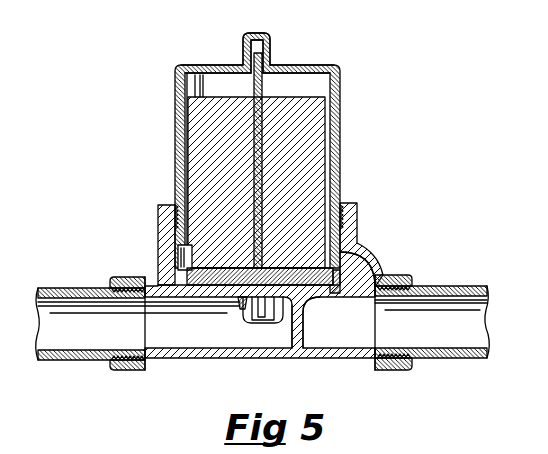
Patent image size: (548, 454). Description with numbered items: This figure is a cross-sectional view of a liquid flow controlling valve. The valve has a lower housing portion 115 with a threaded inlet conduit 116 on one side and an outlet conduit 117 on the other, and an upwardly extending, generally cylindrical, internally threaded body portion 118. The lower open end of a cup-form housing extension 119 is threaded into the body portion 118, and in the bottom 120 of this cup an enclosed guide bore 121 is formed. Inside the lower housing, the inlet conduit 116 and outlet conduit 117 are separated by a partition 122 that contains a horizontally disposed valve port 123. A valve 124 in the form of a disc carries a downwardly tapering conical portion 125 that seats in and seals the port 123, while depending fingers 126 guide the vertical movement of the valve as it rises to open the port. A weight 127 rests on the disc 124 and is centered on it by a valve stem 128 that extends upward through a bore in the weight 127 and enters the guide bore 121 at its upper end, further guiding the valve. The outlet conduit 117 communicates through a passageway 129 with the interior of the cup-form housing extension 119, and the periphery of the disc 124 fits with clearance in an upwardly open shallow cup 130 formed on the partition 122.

The lower housing portion 115 is at (246, 358).
The inlet conduit 116 is at (140, 371).
The outlet conduit 117 is at (401, 366).
The body portion 118 is at (163, 221).
The cup-form housing extension 119 is at (341, 90).
The bottom 120 is at (297, 68).
The guide bore 121 is at (250, 60).
The partition 122 is at (302, 333).
The valve port 123 is at (305, 303).
The valve 124 is at (298, 280).
The conical portion 125 is at (243, 303).
The depending fingers 126 is at (264, 319).
The weight 127 is at (317, 130).
The valve stem 128 is at (252, 87).
The passageway 129 is at (368, 262).
The shallow cup 130 is at (339, 277).